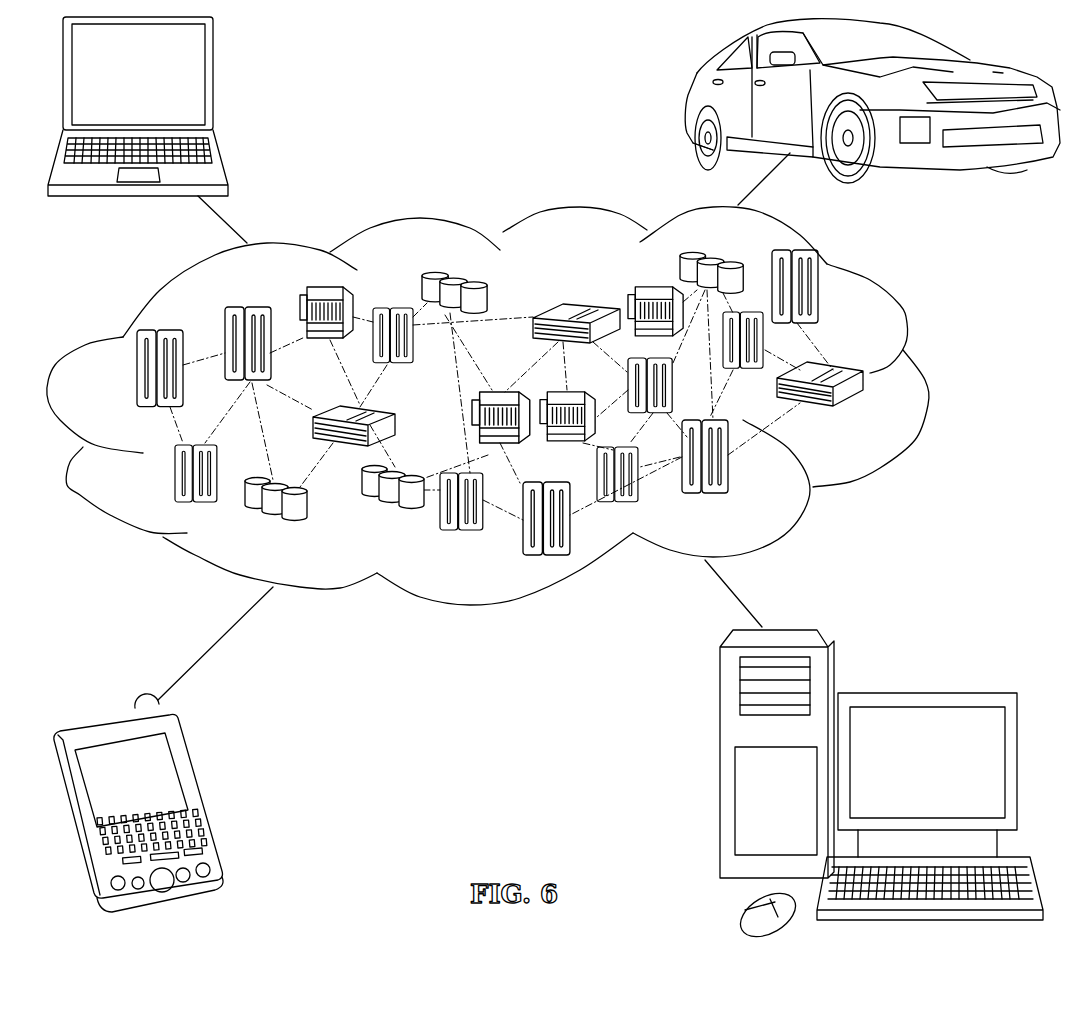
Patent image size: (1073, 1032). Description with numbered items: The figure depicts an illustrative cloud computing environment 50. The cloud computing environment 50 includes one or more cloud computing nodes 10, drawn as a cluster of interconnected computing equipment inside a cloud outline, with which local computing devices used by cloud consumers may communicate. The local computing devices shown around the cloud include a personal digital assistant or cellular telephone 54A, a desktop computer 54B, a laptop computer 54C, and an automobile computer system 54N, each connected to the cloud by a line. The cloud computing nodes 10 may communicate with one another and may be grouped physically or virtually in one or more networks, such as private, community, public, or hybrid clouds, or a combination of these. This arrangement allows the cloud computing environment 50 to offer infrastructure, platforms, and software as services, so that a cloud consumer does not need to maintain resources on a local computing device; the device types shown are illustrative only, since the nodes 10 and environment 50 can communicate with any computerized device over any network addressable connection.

The laptop computer 54C is at (213, 83).
The automobile computer system 54N is at (685, 100).
The cloud computing environment 50 is at (521, 406).
The cloud computing node 10 is at (871, 417).
The personal digital assistant or cellular telephone 54A is at (200, 793).
The desktop computer 54B is at (922, 693).